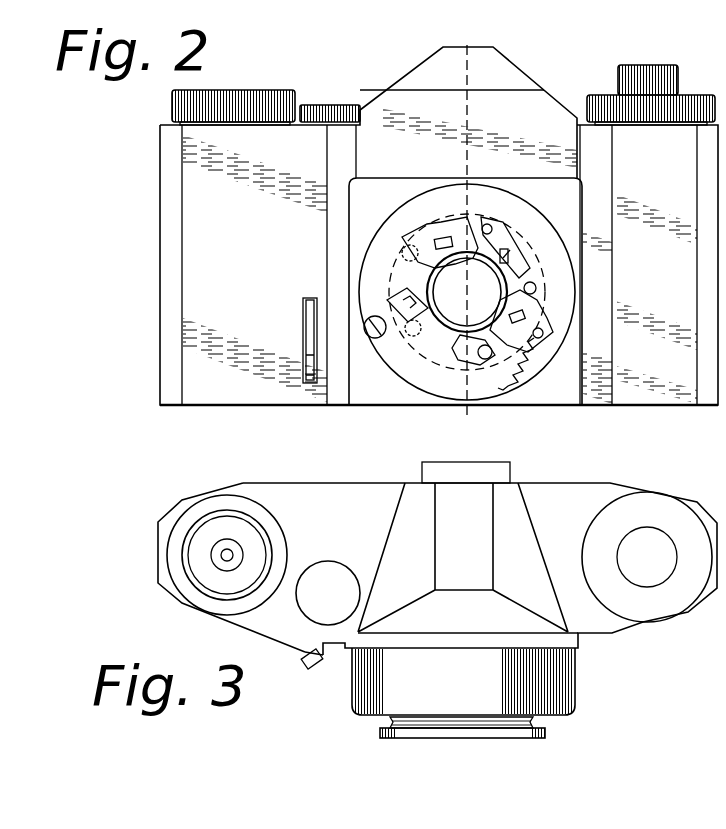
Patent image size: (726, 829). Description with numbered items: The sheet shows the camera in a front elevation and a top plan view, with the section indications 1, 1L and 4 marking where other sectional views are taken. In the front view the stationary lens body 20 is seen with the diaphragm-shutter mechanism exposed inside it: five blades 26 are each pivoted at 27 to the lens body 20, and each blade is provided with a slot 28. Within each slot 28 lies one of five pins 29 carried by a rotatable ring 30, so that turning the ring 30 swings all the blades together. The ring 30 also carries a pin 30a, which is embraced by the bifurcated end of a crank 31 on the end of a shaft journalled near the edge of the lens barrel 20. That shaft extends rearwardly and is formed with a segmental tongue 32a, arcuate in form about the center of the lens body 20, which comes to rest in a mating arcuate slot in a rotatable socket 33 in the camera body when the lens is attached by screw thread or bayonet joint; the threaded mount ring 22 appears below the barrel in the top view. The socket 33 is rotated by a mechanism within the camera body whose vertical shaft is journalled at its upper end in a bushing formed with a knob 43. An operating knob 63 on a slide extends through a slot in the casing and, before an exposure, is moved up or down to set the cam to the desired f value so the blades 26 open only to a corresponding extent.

In FIG. 2, the section line 1- 1 is at (467, 45).
In FIG. 2, the section line 1L- 1L is at (362, 312).
In FIG. 3, the section line 4- 4 is at (292, 453).
In FIG. 2, the lens body 20 is at (525, 208).
In FIG. 3, the lens body 20 is at (575, 688).
In FIG. 3, the threaded lens mount ring 22 is at (545, 733).
In FIG. 2, the blades 26 is at (473, 350).
In FIG. 2, the pivot 27 is at (487, 224).
In FIG. 2, the slot 28 is at (509, 258).
In FIG. 2, the pins 29 is at (508, 252).
In FIG. 2, the rotatable ring 30 is at (427, 242).
In FIG. 2, the pin 30a is at (508, 290).
In FIG. 2, the crank 31 is at (400, 295).
In FIG. 2, the segmental tongue 32a is at (392, 338).
In FIG. 2, the rotatable socket 33 is at (368, 337).
In FIG. 2, the knob 43 is at (312, 104).
In FIG. 3, the knob 43 is at (328, 593).
In FIG. 2, the operating knob 63 is at (305, 366).
In FIG. 3, the operating knob 63 is at (313, 668).